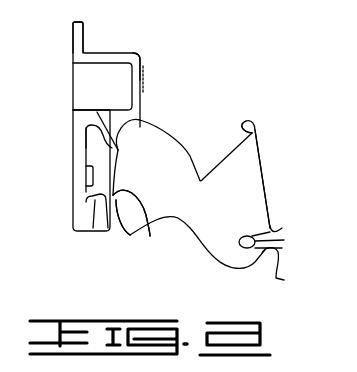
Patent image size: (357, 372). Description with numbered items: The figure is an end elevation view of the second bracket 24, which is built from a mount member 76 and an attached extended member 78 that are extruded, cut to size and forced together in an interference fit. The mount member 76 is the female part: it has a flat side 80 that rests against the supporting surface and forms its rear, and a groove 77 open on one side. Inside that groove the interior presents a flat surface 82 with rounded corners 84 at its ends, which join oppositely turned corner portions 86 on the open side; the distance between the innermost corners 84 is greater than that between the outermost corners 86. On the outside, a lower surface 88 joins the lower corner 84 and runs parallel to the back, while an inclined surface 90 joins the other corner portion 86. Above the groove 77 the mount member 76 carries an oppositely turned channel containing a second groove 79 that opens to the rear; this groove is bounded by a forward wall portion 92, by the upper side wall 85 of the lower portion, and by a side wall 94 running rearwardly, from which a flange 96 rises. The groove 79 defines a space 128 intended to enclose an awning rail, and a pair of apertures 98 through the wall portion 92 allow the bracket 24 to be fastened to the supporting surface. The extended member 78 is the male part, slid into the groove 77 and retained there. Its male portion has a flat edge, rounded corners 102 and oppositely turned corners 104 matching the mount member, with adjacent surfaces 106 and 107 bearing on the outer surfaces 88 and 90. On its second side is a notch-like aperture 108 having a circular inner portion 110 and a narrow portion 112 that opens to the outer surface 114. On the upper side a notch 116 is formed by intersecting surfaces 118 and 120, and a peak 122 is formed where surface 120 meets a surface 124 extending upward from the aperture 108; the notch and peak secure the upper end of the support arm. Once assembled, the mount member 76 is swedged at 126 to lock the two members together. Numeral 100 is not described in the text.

The second bracket 24 is at (211, 66).
The mount member 76 is at (70, 248).
The groove 77 is at (78, 153).
The extended member 78 is at (208, 265).
The groove 79 is at (137, 59).
The flat side 80 is at (86, 158).
The flat surface 82 is at (86, 168).
The rounded corners 84 is at (80, 122).
The upper side wall 85 is at (103, 82).
The corner portions 86 is at (77, 111).
The lower surface 88 is at (86, 237).
The inclined surface 90 is at (100, 110).
The wall portion 92 is at (142, 65).
The side wall 94 is at (107, 55).
The flange 96 is at (81, 31).
The apertures 98 is at (145, 86).
The wall 100 is at (86, 187).
The rounded corners 102 is at (86, 145).
The oppositely turned corners 104 is at (140, 232).
The surface 106 is at (123, 240).
The surface 107 is at (115, 148).
The notch-like aperture 108 is at (283, 252).
The circular inner portion 110 is at (284, 243).
The narrow portion 112 is at (284, 280).
The outer surface 114 is at (282, 228).
The notch 116 is at (241, 114).
The surface 118 is at (189, 150).
The surface 120 is at (243, 133).
The peak 122 is at (250, 135).
The surface 124 is at (262, 162).
The swedged portion 126 is at (93, 168).
The space 128 is at (110, 72).